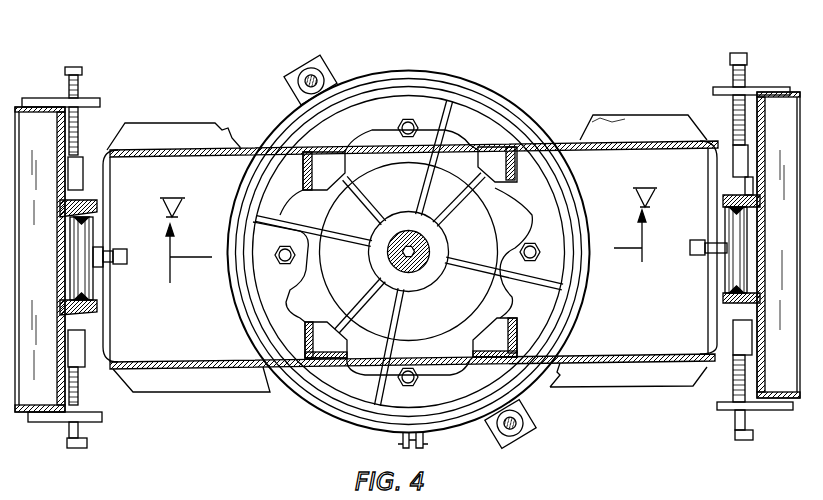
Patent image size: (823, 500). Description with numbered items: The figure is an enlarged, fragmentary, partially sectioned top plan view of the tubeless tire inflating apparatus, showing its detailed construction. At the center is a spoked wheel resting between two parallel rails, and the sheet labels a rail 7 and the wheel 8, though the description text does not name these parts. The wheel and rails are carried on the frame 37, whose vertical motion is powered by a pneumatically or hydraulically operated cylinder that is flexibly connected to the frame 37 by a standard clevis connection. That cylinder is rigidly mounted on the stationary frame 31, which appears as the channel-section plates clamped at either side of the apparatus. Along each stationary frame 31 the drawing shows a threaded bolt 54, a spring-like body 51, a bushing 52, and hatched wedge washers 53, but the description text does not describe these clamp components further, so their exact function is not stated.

The rail 7 is at (506, 143).
The wheel 8 is at (447, 199).
The stationary frame 31 is at (780, 409).
The frame 37 is at (660, 386).
The spring 51 is at (723, 221).
The bushing 52 is at (737, 197).
The washer 53 is at (63, 312).
The bolt 54 is at (82, 66).